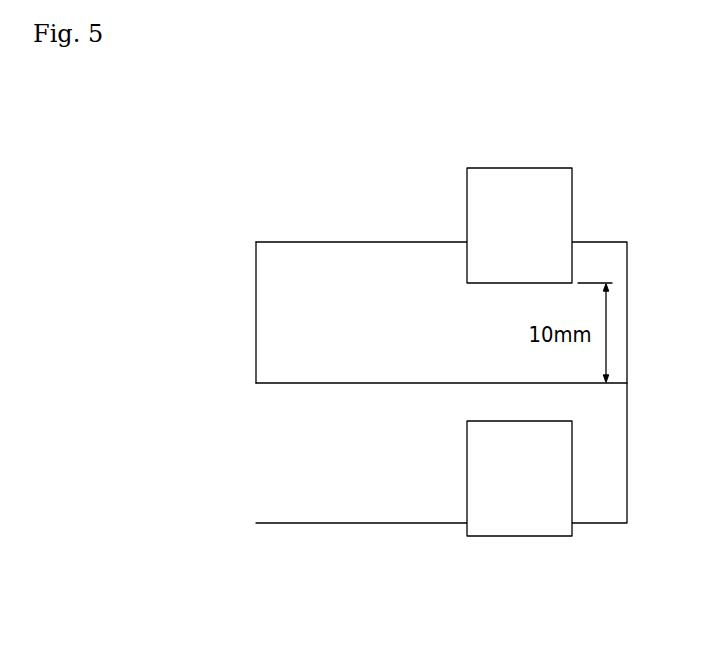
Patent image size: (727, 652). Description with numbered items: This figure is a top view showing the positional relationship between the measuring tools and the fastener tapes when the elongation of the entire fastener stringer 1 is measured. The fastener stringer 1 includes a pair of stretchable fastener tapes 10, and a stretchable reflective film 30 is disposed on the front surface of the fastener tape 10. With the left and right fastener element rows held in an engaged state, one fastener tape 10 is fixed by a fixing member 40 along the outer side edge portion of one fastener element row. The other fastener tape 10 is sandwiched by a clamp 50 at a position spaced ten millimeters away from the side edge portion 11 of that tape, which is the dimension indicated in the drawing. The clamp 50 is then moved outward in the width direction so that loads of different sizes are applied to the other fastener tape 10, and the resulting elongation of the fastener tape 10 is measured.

The fastener stringer 1 is at (212, 194).
The fastener tape 10 is at (298, 524).
The side edge portion 11 is at (257, 383).
The stretchable reflective film 30 is at (270, 292).
The fixing member 40 is at (513, 517).
The clamp 50 is at (563, 208).